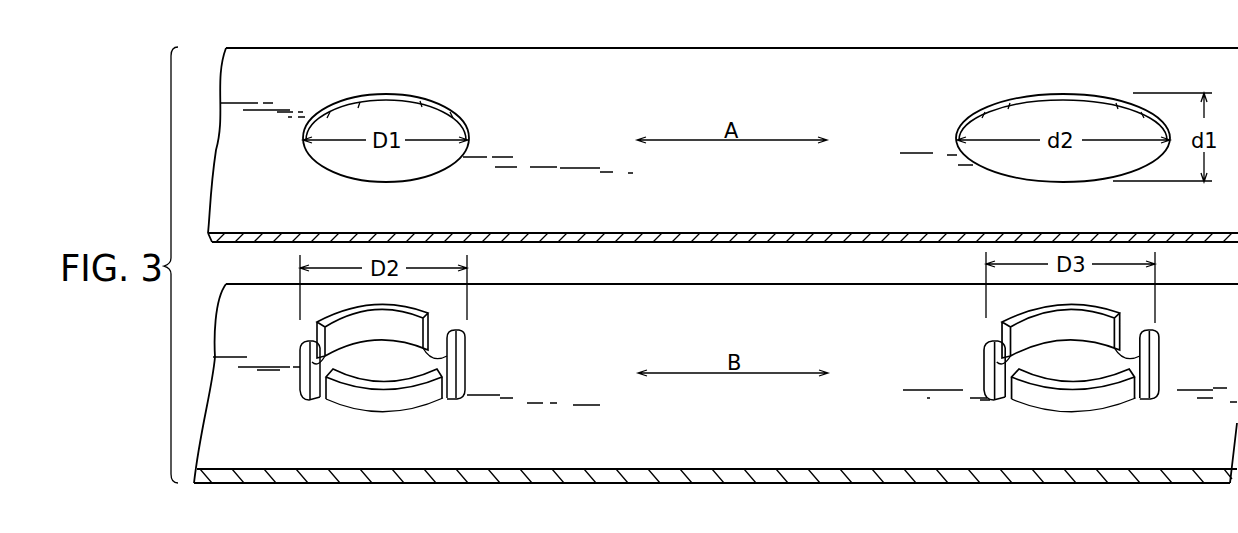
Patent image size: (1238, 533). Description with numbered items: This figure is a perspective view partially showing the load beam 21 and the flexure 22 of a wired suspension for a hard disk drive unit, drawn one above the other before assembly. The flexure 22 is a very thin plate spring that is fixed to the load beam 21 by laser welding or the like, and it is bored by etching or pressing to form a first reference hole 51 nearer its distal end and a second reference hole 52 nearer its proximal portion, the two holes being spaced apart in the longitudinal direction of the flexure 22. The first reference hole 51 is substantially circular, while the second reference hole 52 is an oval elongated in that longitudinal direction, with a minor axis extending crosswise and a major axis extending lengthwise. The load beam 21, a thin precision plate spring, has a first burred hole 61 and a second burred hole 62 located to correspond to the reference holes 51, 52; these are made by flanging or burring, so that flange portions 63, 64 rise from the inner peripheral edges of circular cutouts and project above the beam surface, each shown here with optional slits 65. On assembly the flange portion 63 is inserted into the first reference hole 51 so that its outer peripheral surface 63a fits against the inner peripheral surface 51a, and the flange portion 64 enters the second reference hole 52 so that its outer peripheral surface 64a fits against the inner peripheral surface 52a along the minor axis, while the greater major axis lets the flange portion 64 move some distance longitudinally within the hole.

The load beam 21 is at (722, 458).
The flexure 22 is at (716, 222).
The first reference hole 51 is at (368, 135).
The inner peripheral surface of the first reference hole 51a is at (318, 155).
The second reference hole 52 is at (1063, 120).
The inner peripheral surface of the second reference hole 52a is at (1018, 101).
The first burred hole 61 is at (397, 372).
The second burred hole 62 is at (1078, 372).
The flange portion 63 is at (428, 313).
The outer peripheral surface of the flange portion 63a is at (346, 400).
The flange portion 64 is at (1113, 313).
The outer peripheral surface of the flange portion 64a is at (1036, 398).
The slits 65 is at (301, 356).